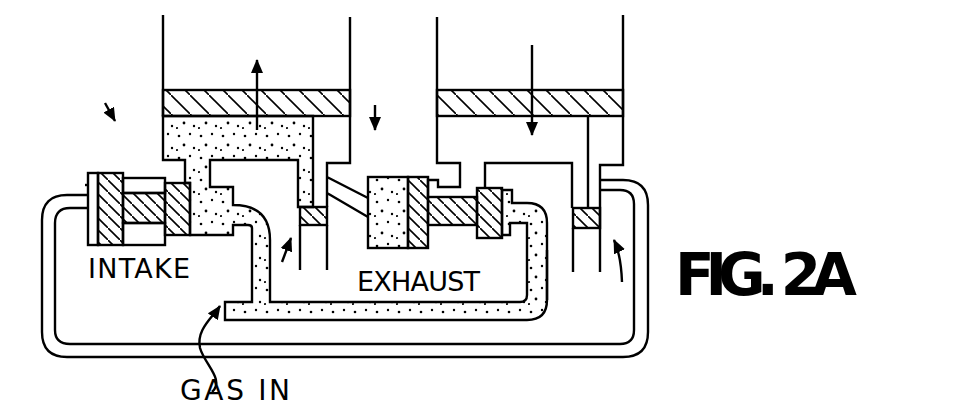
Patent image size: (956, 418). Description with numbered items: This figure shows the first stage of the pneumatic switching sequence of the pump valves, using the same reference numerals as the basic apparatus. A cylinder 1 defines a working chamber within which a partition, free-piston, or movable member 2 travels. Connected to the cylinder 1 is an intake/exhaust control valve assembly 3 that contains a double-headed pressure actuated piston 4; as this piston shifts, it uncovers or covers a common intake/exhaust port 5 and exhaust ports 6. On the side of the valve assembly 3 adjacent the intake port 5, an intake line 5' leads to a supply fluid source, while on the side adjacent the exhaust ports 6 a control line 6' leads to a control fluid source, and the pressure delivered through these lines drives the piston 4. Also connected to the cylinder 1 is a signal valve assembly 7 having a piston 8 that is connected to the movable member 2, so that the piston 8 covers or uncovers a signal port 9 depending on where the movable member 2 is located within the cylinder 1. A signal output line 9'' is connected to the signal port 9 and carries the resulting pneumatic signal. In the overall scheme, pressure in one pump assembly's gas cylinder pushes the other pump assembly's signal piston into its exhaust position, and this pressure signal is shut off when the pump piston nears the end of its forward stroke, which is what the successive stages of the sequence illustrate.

The cylinder 1 is at (437, 57).
The movable member 2 is at (213, 90).
The intake/exhaust control valve assembly 3 is at (236, 97).
The double-headed pressure actuated piston 4 is at (115, 187).
The common intake/exhaust port 5 is at (359, 207).
The intake line 5' is at (572, 291).
The exhaust ports 6 is at (424, 146).
The control line 6' is at (62, 164).
The signal valve assembly 7 is at (449, 277).
The piston 8 is at (305, 198).
The signal port 9 is at (360, 251).
The signal output line 9'' is at (344, 294).